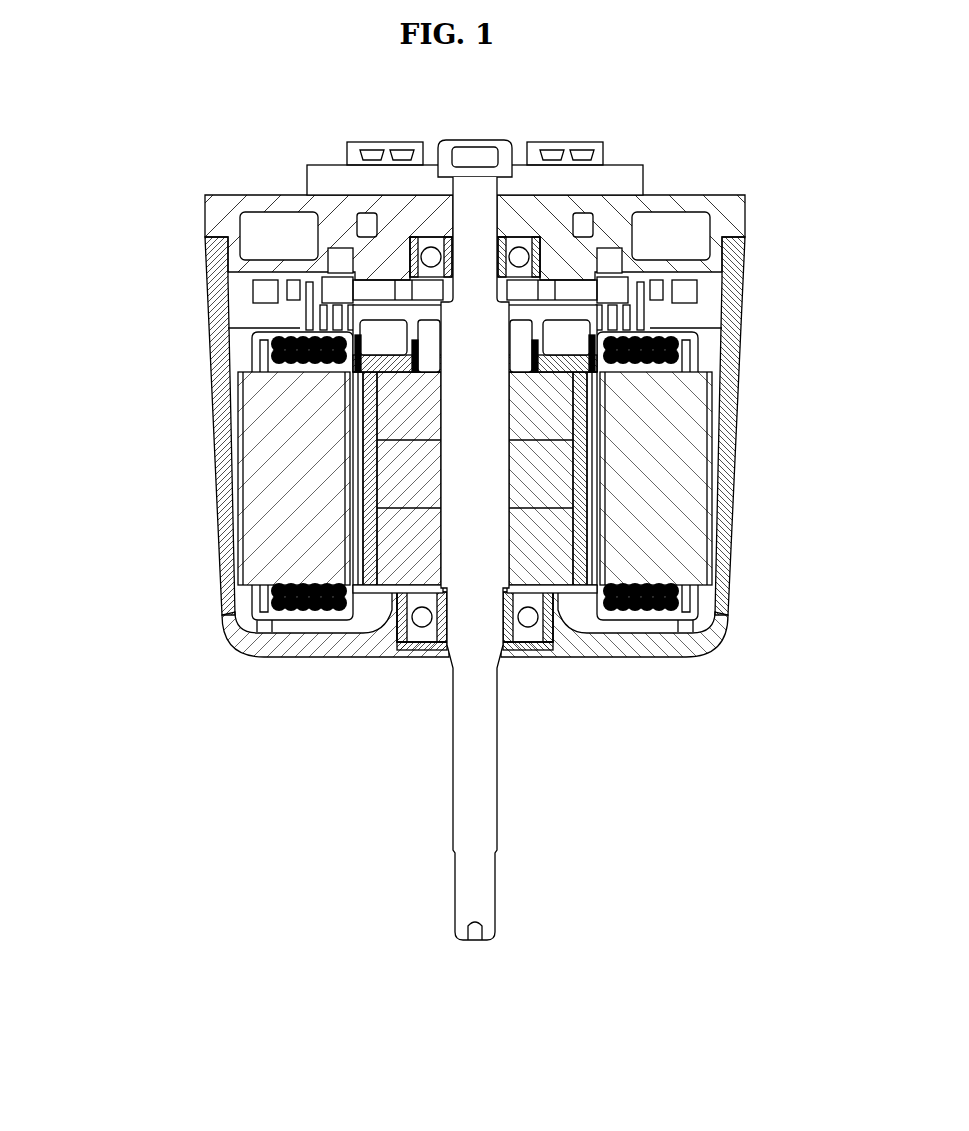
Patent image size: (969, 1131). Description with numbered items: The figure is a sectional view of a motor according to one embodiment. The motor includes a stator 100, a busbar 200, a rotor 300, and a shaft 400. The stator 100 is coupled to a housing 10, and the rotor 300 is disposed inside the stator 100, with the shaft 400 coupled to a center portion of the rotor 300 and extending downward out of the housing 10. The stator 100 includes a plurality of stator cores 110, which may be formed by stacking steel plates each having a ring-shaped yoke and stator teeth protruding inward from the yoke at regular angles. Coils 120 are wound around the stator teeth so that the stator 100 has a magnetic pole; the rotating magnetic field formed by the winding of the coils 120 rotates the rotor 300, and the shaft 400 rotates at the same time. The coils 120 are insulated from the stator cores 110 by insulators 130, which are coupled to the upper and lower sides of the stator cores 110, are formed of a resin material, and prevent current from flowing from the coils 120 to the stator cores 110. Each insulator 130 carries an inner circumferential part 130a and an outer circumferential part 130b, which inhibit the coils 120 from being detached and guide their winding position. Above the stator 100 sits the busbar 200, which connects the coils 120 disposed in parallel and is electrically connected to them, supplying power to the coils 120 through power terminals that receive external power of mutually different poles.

The housing 10 is at (226, 594).
The stator 100 is at (374, 481).
The stator core 110 is at (257, 467).
The coil 120 is at (262, 333).
The insulator 130 is at (368, 481).
The inner circumferential part 130a is at (349, 376).
The outer circumferential part 130b is at (253, 348).
The busbar 200 is at (302, 315).
The rotor 300 is at (552, 412).
The shaft 400 is at (467, 457).